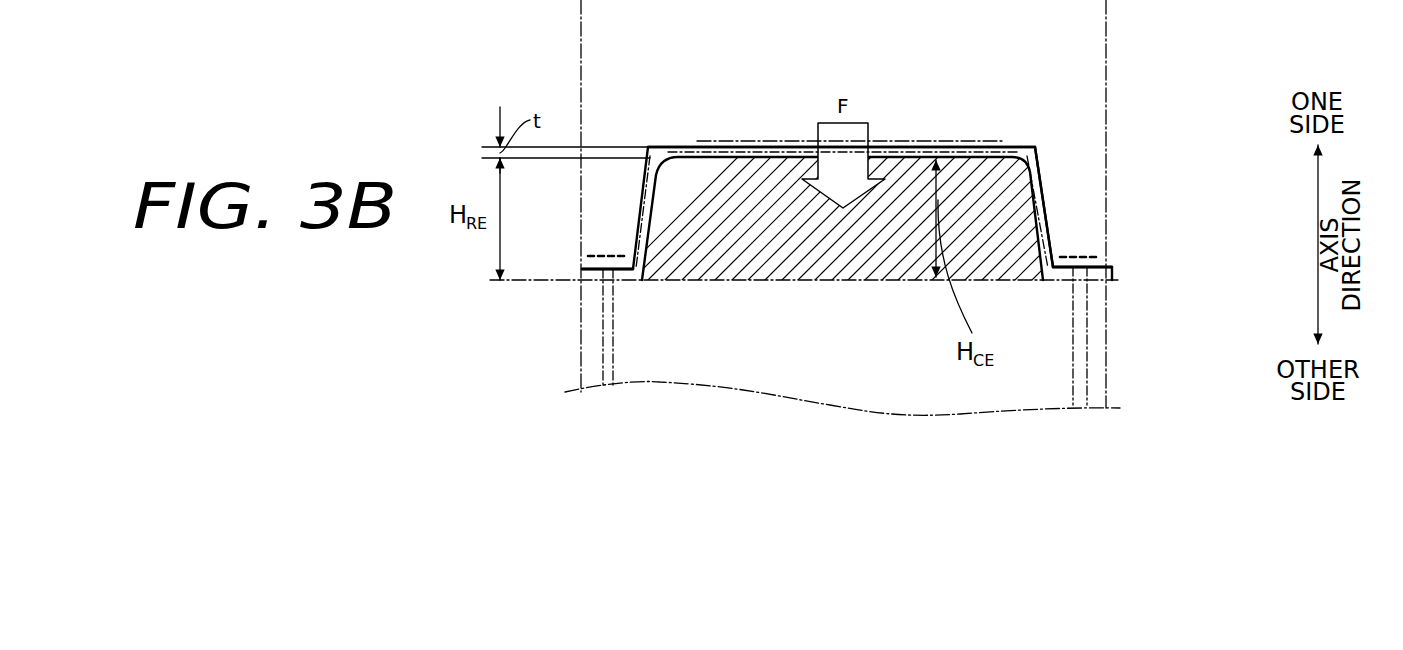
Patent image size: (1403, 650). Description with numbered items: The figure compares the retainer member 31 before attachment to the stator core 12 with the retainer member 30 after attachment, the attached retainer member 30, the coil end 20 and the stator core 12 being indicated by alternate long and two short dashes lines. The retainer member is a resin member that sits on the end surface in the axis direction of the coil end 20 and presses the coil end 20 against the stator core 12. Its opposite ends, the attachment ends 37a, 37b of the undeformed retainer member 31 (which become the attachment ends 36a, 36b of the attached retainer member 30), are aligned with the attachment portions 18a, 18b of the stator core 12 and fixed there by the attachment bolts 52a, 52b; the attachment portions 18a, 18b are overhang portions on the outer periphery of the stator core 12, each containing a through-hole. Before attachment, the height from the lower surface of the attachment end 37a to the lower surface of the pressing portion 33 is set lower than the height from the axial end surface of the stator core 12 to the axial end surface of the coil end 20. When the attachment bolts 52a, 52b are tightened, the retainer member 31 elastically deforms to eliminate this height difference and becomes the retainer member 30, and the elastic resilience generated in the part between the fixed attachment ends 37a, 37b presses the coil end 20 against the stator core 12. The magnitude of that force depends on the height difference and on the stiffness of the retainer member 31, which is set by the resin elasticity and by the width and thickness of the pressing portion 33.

The stator core 12 is at (1100, 393).
The attachment portion 18a is at (587, 367).
The attachment portion 18b is at (1092, 353).
The coil end 20 is at (715, 185).
The retainer member 30 is at (957, 142).
The retainer member 31 is at (1038, 180).
The pressing portion 33 is at (667, 147).
The attachment end 36a is at (587, 272).
The attachment end 36b is at (1107, 263).
The attachment end 37a is at (587, 272).
The attachment end 37b is at (1107, 263).
The attachment bolt 52a is at (592, 256).
The attachment bolt 52b is at (1100, 258).